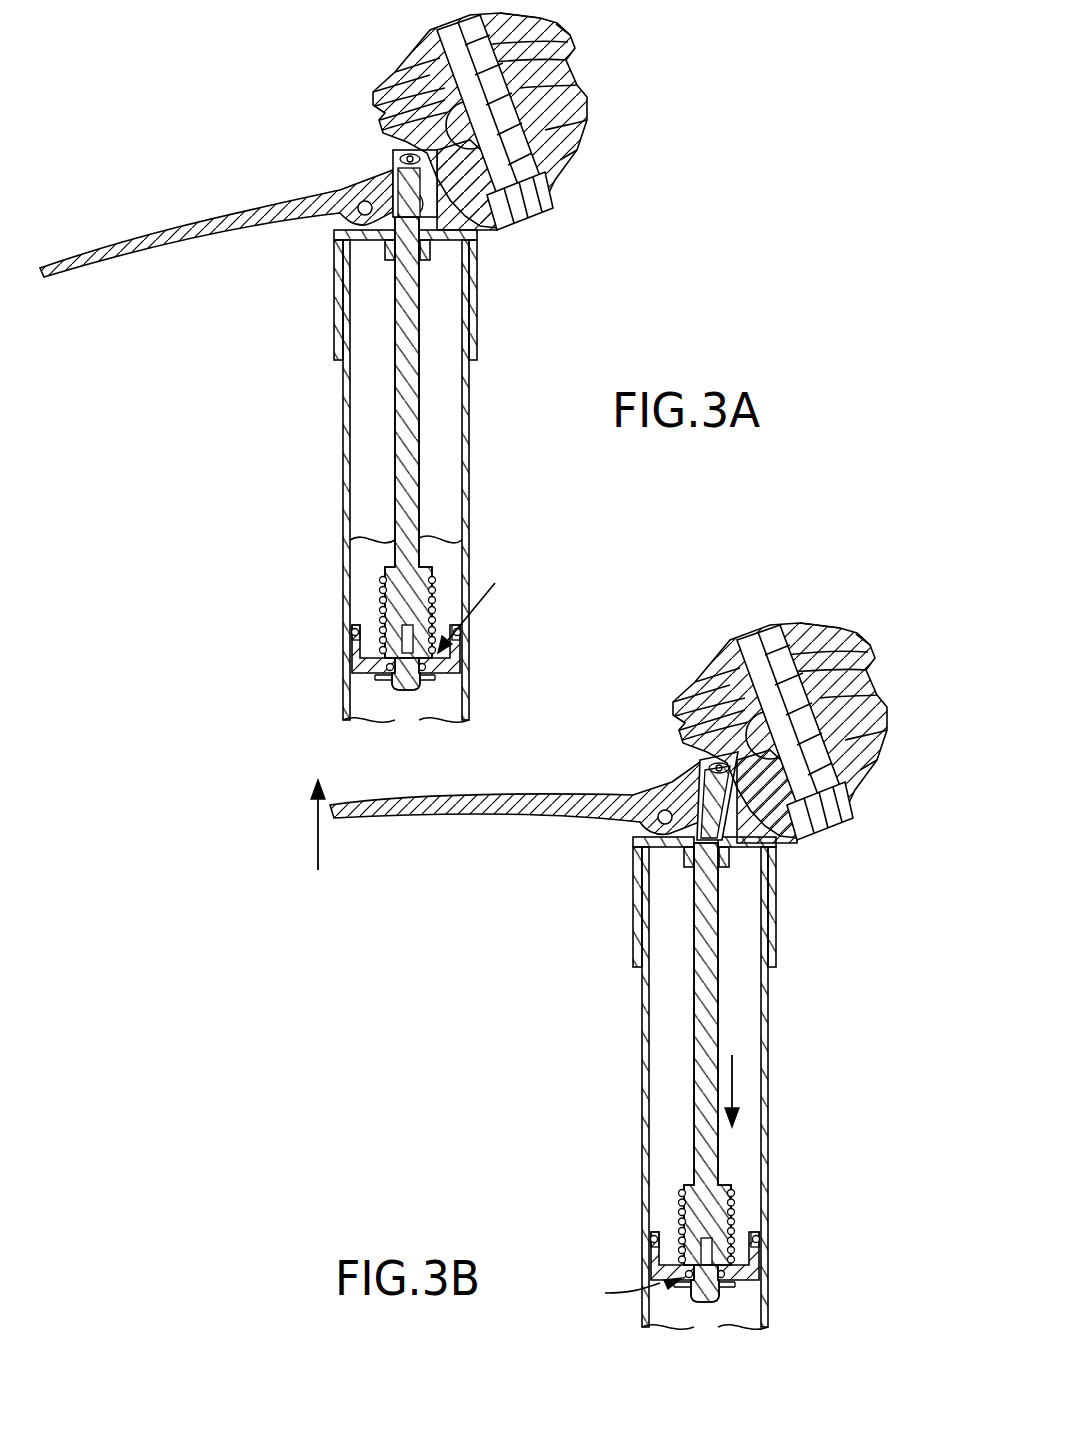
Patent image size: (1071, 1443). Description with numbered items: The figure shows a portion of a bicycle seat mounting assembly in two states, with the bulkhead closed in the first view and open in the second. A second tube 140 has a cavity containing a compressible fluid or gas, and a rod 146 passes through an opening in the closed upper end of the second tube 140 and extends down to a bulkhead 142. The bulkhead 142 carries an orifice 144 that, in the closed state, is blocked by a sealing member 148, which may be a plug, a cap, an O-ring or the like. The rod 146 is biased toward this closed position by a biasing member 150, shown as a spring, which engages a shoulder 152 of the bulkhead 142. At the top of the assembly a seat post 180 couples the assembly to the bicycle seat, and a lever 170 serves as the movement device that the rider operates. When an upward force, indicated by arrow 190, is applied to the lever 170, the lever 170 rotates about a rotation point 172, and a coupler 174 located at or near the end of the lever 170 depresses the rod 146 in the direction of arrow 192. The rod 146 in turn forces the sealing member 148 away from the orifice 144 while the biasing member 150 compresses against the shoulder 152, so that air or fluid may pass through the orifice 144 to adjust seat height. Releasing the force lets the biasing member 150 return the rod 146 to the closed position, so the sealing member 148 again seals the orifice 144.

In FIG. 3A, the second tube 140 is at (472, 440).
In FIG. 3A, the bulkhead 142 is at (462, 666).
In FIG. 3B, the orifice 144 is at (650, 1285).
In FIG. 3A, the rod 146 is at (400, 455).
In FIG. 3A, the sealing member 148 is at (410, 688).
In FIG. 3A, the biasing member 150 is at (380, 606).
In FIG. 3A, the shoulder 152 is at (485, 610).
In FIG. 3A, the lever 170 is at (243, 218).
In FIG. 3B, the lever 170 is at (489, 799).
In FIG. 3A, the rotation point 172 is at (364, 200).
In FIG. 3A, the coupler 174 is at (413, 207).
In FIG. 3A, the seat post 180 is at (548, 192).
In FIG. 3B, the seat post 180 is at (776, 656).
In FIG. 3B, the arrow 190 is at (320, 855).
In FIG. 3B, the arrow 192 is at (733, 1080).